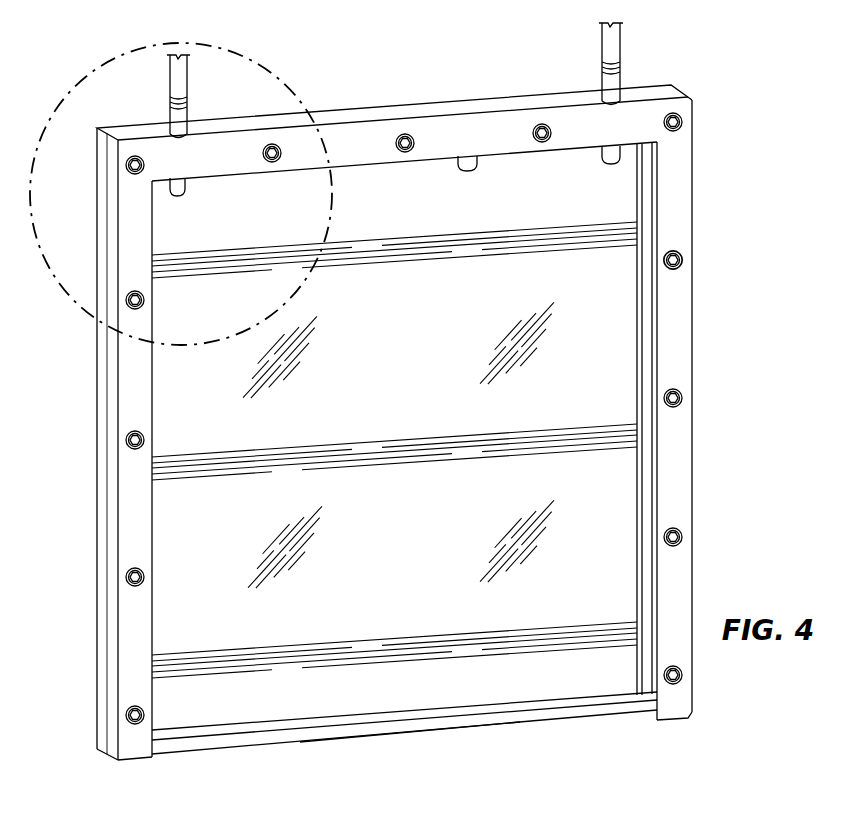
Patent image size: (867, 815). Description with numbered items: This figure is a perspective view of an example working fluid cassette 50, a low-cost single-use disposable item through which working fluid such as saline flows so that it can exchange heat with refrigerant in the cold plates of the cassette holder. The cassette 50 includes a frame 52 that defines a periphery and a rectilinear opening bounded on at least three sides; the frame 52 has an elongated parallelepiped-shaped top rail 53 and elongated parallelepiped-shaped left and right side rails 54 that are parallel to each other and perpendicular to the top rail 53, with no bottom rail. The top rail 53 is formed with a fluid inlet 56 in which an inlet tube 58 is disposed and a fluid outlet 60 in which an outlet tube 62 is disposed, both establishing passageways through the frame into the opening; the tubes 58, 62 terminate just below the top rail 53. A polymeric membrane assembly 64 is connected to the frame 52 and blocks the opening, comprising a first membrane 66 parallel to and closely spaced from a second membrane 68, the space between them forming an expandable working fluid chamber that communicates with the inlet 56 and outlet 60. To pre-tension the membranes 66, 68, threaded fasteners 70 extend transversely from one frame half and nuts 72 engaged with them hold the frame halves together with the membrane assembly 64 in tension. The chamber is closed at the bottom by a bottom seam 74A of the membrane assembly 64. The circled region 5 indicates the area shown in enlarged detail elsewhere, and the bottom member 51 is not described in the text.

The detail region of FIG. 5 is at (80, 66).
The working fluid cassette 50 is at (748, 363).
The bottom frame member 51 is at (282, 742).
The frame 52 is at (470, 160).
The top rail 53 is at (347, 108).
The side rails 54 is at (130, 372).
The fluid inlet 56 is at (170, 118).
The inlet tube 58 is at (187, 115).
The fluid outlet 60 is at (603, 88).
The outlet tube 62 is at (622, 82).
The membrane assembly 64 is at (436, 755).
The first membrane 66 is at (603, 483).
The second membrane 68 is at (610, 467).
The threaded fasteners 70 is at (675, 252).
The nuts 72 is at (682, 267).
The bottom seam 74A is at (525, 717).